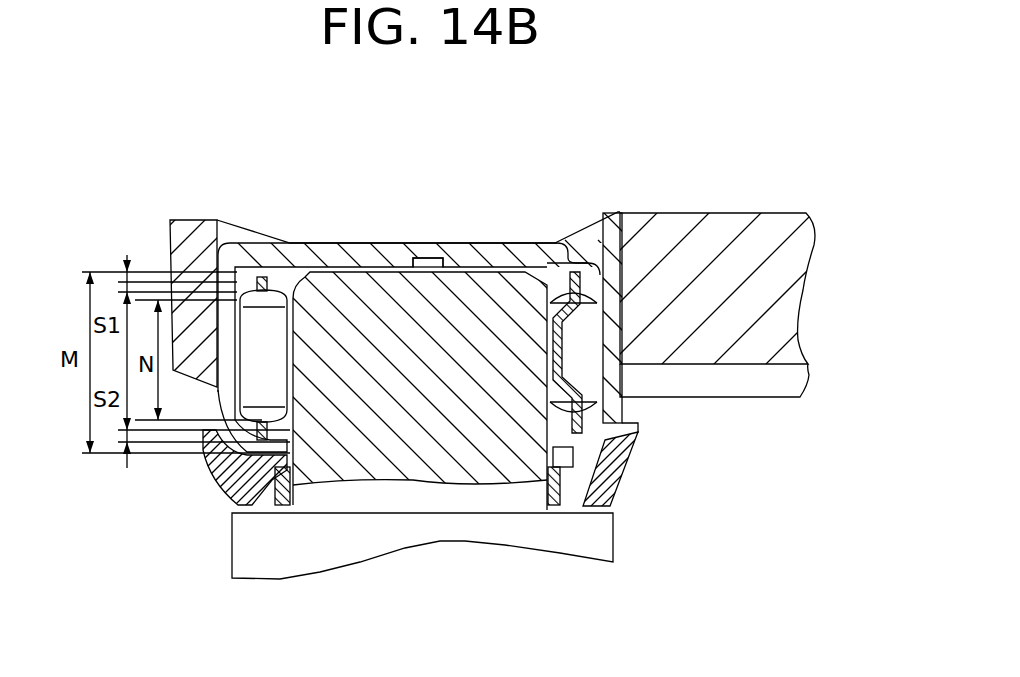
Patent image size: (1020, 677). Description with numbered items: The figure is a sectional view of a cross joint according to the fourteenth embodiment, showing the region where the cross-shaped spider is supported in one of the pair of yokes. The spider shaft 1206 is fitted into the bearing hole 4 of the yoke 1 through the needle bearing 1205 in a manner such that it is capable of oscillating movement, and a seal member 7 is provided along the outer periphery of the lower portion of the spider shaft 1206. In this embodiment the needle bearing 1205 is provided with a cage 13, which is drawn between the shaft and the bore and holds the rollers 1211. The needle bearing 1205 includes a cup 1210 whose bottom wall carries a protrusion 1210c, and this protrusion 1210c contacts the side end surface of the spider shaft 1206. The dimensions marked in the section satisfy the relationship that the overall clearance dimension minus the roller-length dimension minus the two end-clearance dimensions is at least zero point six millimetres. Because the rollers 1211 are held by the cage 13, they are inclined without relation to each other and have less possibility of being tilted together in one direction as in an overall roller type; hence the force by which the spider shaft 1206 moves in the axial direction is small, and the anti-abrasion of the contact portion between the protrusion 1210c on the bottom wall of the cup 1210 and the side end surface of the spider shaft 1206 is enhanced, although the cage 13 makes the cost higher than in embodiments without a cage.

The yoke 1 is at (730, 212).
The bearing hole 4 is at (602, 213).
The seal member 7 is at (632, 476).
The cage 13 is at (560, 272).
The needle bearing 1205 is at (493, 243).
The spider shaft 1206 is at (325, 290).
The cup 1210 is at (370, 243).
The protrusion 1210c is at (430, 262).
The rollers 1211 is at (600, 375).